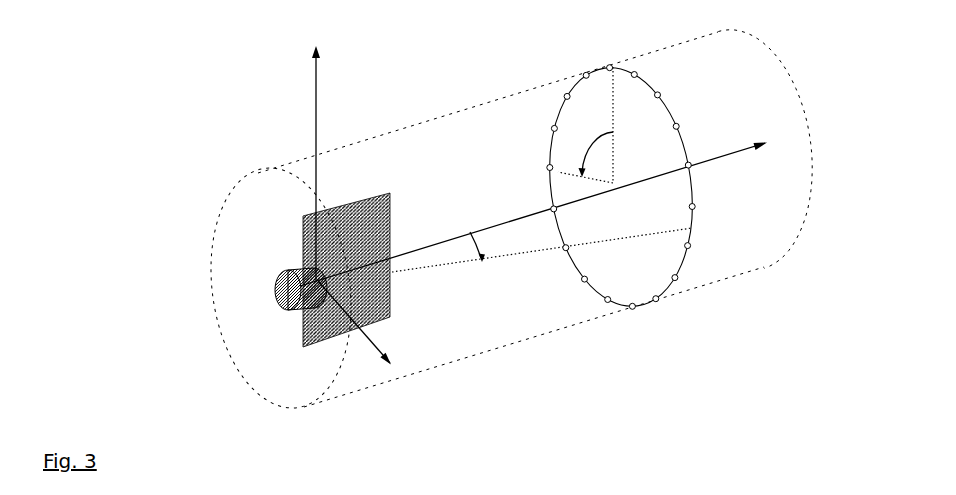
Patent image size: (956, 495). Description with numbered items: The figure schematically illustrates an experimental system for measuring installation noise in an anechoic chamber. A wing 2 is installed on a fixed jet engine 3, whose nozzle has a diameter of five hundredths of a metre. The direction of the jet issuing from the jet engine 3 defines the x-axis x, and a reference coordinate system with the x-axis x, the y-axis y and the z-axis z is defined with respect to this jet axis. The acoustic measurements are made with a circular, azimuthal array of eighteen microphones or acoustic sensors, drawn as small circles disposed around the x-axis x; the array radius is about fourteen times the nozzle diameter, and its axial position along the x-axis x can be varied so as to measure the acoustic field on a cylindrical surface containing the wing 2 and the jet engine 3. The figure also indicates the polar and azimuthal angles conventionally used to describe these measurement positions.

The wing 2 is at (322, 235).
The jet engine 3 is at (283, 308).
The x-axis x is at (538, 215).
The y-axis y is at (325, 163).
The z-axis z is at (362, 327).